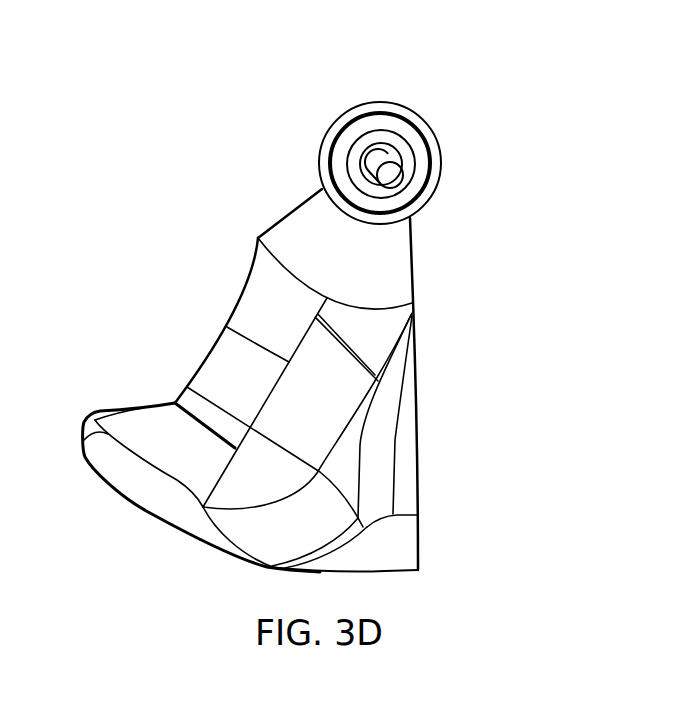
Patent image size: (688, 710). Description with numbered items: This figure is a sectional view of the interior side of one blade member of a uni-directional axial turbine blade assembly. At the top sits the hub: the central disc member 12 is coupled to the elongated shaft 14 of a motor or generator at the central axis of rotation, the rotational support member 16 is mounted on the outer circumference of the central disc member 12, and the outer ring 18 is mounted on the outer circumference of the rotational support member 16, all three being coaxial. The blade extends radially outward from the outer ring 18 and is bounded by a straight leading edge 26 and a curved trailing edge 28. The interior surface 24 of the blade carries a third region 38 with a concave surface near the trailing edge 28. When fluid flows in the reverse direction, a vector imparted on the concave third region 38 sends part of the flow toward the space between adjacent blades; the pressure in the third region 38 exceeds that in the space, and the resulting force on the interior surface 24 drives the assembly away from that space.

The central disc member 12 is at (357, 150).
The elongated shaft 14 is at (380, 158).
The rotational support member 16 is at (360, 124).
The outer ring 18 is at (320, 163).
The interior surface 24 is at (286, 410).
The leading edge 26 is at (415, 380).
The trailing edge 28 is at (244, 288).
The third region 38 is at (173, 402).